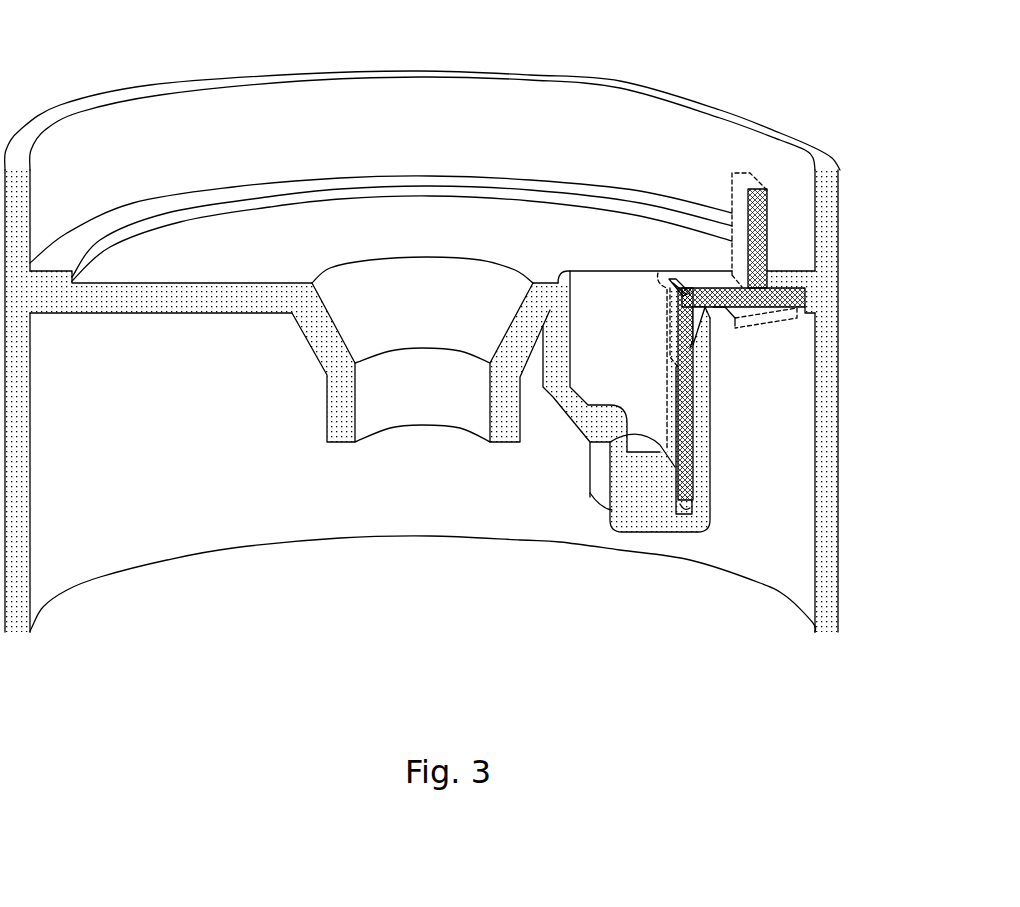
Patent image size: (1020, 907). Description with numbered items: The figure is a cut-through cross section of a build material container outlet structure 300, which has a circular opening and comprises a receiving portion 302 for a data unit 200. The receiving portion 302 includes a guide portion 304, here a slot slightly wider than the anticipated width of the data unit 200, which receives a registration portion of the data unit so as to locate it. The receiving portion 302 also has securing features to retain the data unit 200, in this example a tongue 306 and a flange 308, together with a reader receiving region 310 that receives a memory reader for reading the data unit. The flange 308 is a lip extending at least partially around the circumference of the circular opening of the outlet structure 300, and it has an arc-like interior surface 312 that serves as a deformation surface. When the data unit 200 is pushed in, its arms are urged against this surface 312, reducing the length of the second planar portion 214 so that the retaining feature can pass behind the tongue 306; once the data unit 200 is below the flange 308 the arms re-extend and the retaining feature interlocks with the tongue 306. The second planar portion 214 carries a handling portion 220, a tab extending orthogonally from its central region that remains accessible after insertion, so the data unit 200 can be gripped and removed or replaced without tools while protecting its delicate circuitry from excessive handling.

The build material container outlet structure 300 is at (148, 86).
The data unit 200 is at (685, 280).
The receiving portion 302 is at (692, 249).
The second planar portion 214 is at (703, 280).
The handling portion 220 is at (767, 237).
The arc-like interior surface 312 is at (770, 268).
The flange 308 is at (805, 286).
The reader receiving region 310 is at (645, 387).
The guide portion 304 is at (688, 515).
The tongue 306 is at (717, 337).